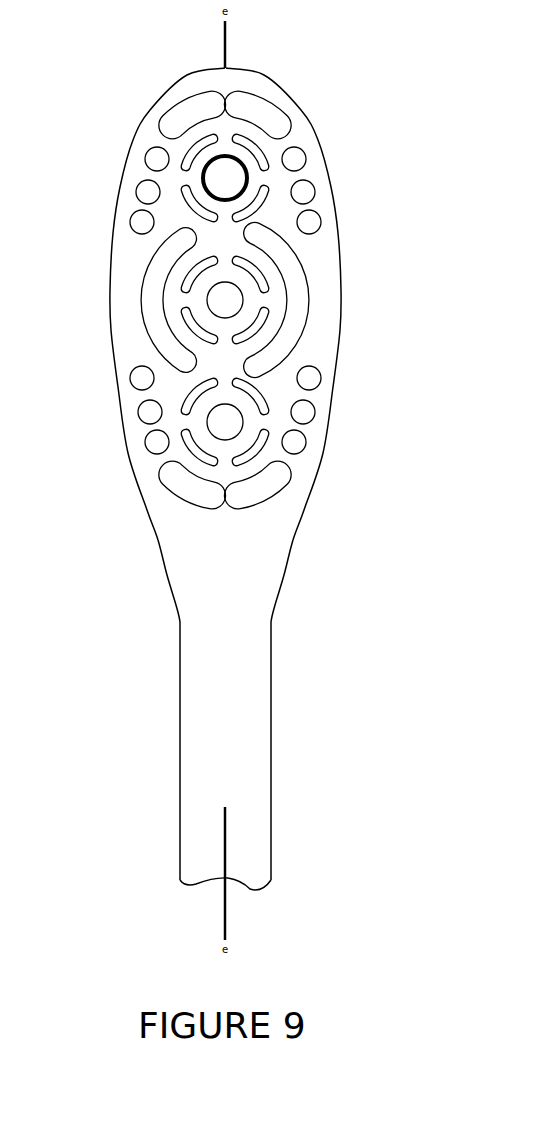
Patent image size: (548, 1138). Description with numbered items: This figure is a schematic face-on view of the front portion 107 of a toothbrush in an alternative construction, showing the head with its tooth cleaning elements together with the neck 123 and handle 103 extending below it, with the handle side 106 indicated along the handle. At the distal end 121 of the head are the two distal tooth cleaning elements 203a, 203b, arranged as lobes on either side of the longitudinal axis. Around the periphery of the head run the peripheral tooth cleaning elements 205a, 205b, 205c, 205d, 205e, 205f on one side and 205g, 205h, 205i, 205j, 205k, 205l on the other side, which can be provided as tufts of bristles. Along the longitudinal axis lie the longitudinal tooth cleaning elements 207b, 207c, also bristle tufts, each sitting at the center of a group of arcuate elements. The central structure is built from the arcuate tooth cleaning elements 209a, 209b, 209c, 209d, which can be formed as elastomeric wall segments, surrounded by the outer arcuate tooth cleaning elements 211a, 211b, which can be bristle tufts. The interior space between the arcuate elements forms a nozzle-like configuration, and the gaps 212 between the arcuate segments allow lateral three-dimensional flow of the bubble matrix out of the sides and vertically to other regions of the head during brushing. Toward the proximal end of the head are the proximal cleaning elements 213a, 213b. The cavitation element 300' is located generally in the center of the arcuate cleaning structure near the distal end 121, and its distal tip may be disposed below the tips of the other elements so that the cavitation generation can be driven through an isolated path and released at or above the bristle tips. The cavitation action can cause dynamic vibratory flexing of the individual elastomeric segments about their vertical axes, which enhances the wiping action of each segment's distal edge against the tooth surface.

The handle 103 is at (268, 775).
The handle side edge 106 is at (260, 667).
The front portion 107 is at (334, 554).
The distal end 121 is at (242, 72).
The neck 123 is at (246, 578).
The distal tooth cleaning element 203a is at (268, 100).
The distal tooth cleaning element 203b is at (195, 97).
The peripheral tooth cleaning element 205a is at (305, 157).
The peripheral tooth cleaning element 205b is at (315, 192).
The peripheral tooth cleaning element 205c is at (321, 221).
The peripheral tooth cleaning element 205d is at (321, 375).
The peripheral tooth cleaning element 205e is at (315, 410).
The peripheral tooth cleaning element 205f is at (306, 442).
The peripheral tooth cleaning element 205g is at (145, 158).
The peripheral tooth cleaning element 205h is at (136, 193).
The peripheral tooth cleaning element 205i is at (130, 224).
The peripheral tooth cleaning element 205j is at (130, 379).
The peripheral tooth cleaning element 205k is at (138, 414).
The peripheral tooth cleaning element 205l is at (145, 447).
The longitudinal tooth cleaning element 207b is at (235, 301).
The longitudinal tooth cleaning element 207c is at (236, 422).
The arcuate tooth cleaning element 209a is at (150, 267).
The arcuate tooth cleaning element 209b is at (177, 335).
The arcuate tooth cleaning element 209c is at (305, 257).
The arcuate tooth cleaning element 209d is at (263, 332).
The arcuate tooth cleaning element 211a is at (311, 290).
The arcuate tooth cleaning element 211b is at (138, 299).
The gap 212 is at (231, 231).
The proximal cleaning element 213a is at (275, 500).
The proximal cleaning element 213b is at (173, 494).
The cavitation element 300' is at (297, 178).